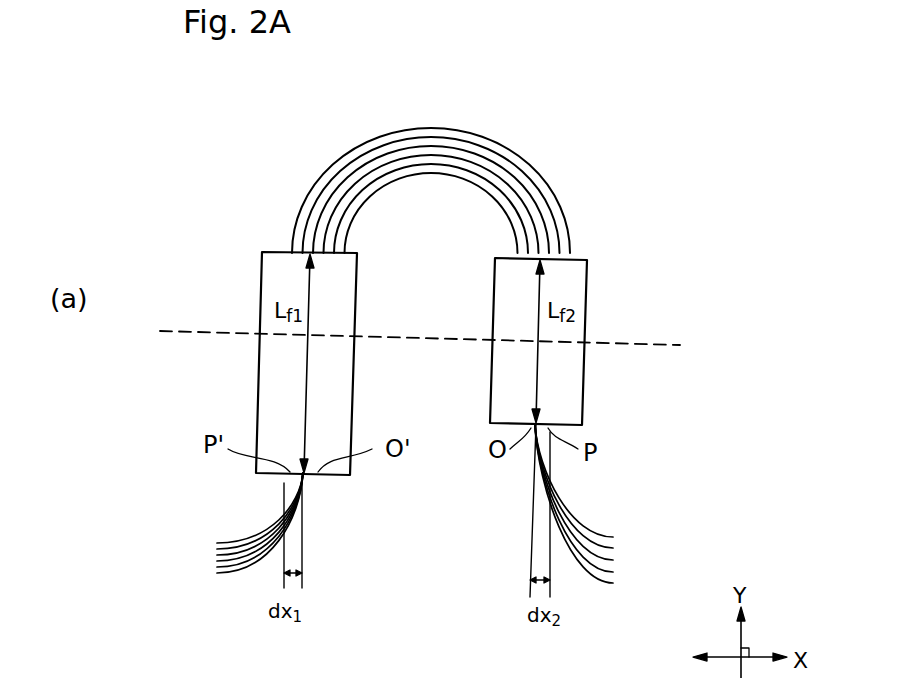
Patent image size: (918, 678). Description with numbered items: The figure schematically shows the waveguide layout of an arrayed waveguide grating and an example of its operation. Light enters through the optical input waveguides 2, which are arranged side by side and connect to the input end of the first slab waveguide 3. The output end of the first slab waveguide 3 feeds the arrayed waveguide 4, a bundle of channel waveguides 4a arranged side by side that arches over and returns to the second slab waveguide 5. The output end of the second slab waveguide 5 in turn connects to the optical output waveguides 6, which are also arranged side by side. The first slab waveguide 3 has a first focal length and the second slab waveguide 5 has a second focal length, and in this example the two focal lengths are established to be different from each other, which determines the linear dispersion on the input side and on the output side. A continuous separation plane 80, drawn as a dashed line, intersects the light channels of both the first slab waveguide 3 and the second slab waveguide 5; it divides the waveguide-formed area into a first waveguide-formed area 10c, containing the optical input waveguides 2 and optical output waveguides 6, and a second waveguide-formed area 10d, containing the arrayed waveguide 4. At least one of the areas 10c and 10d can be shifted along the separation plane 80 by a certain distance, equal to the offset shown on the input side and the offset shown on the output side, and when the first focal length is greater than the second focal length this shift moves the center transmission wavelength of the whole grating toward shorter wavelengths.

The optical input waveguides 2 is at (240, 541).
The first slab waveguide 3 is at (278, 265).
The arrayed waveguide 4 is at (402, 165).
The channel waveguides 4a is at (497, 146).
The second slab waveguide 5 is at (567, 276).
The optical output waveguides 6 is at (570, 520).
The first waveguide-formed area 10c is at (655, 431).
The second waveguide-formed area 10d is at (662, 184).
The separation plane 80 is at (632, 341).